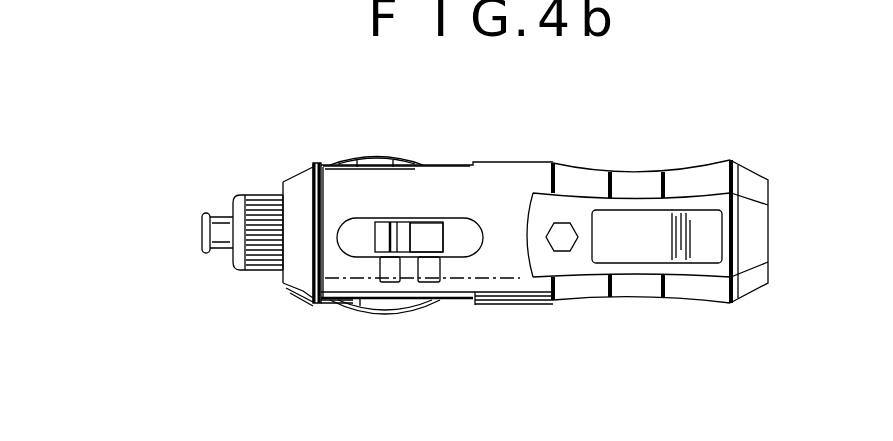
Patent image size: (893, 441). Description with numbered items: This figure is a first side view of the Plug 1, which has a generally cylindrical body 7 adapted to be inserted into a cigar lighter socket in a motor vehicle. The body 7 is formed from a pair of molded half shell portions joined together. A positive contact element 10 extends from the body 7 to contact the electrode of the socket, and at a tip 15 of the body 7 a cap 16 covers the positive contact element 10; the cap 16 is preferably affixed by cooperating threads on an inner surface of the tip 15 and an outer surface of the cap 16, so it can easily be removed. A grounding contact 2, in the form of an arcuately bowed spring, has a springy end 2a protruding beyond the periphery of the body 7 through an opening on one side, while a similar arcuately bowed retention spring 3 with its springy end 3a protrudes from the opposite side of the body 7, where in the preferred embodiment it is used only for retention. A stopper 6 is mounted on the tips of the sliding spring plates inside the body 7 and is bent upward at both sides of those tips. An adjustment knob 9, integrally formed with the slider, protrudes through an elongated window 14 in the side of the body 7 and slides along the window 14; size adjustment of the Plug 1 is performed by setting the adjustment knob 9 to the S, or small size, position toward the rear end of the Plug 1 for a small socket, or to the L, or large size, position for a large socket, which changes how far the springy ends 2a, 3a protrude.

The Plug 1 is at (588, 310).
The grounding contact 2 is at (383, 159).
The springy end 2a is at (340, 163).
The retention spring 3 is at (422, 308).
The springy end 3a is at (350, 310).
The stopper 6 is at (357, 166).
The body 7 is at (503, 292).
The adjustment knob 9 is at (393, 222).
The positive contact element 10 is at (204, 246).
The elongated window 14 is at (438, 226).
The tip 15 is at (297, 294).
The cap 16 is at (260, 272).